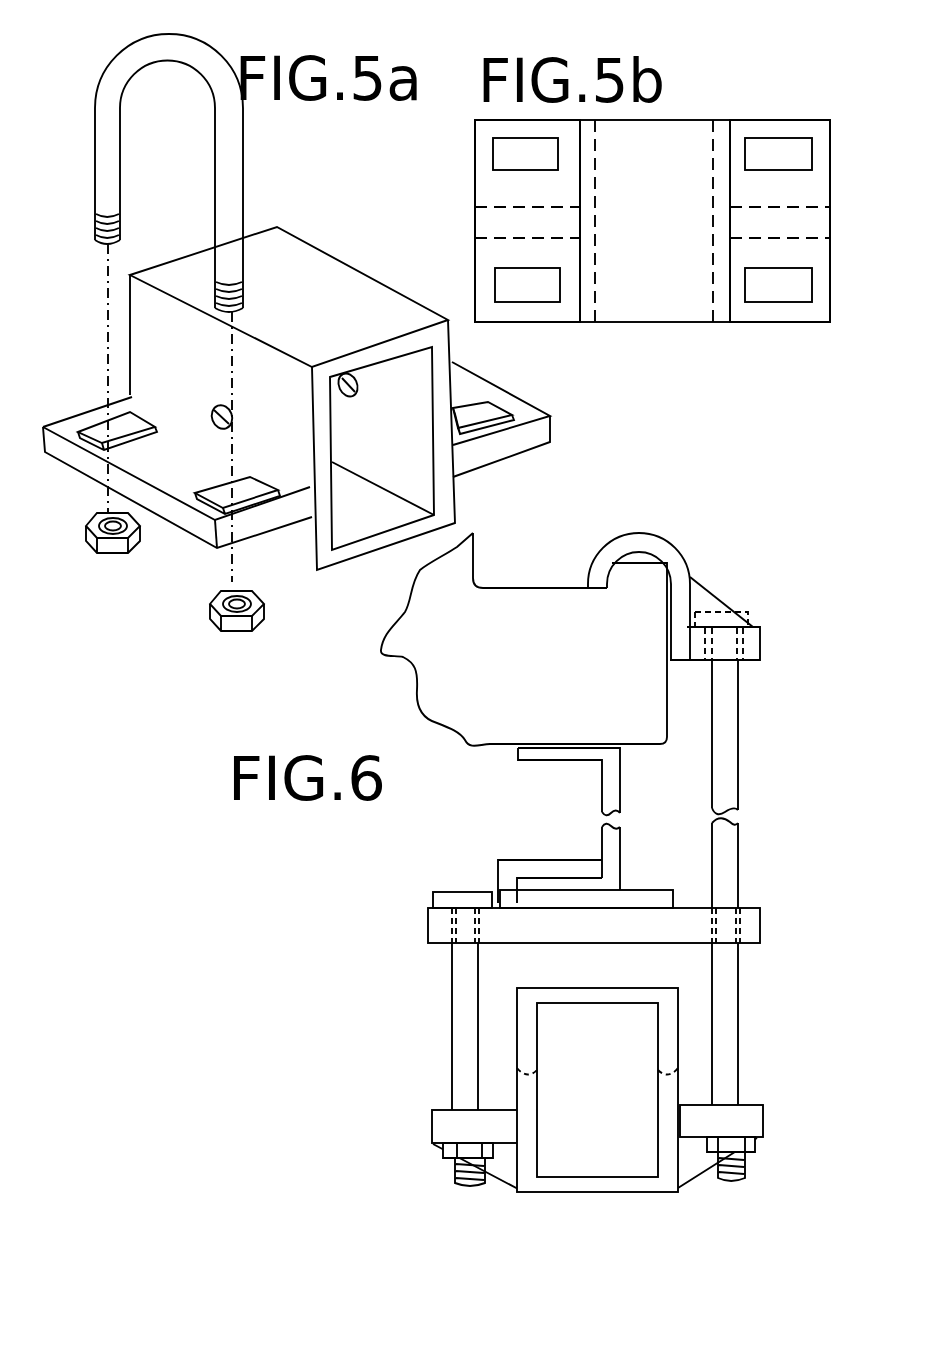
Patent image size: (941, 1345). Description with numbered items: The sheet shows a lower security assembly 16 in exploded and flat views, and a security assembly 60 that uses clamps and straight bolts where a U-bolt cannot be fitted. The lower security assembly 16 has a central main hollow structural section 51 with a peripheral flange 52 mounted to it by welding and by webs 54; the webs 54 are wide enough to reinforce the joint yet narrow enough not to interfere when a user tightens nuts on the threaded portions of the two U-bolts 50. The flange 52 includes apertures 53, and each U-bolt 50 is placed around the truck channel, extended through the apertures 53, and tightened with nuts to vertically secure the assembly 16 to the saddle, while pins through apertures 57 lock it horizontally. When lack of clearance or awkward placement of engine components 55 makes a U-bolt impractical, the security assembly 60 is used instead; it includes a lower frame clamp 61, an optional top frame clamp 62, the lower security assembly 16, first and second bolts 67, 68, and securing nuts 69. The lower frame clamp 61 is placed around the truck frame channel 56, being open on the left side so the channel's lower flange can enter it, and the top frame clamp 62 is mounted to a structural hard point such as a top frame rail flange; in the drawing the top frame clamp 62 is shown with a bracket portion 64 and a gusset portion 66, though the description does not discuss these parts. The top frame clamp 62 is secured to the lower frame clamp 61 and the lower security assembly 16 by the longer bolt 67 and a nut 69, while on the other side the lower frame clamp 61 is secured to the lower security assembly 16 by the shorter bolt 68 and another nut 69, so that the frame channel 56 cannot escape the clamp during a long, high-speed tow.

In FIG. 5A, the lower security assembly 16 is at (312, 392).
In FIG. 6, the lower security assembly 16 is at (678, 1028).
In FIG. 5A, the U-bolt 50 is at (245, 155).
In FIG. 5A, the main hollow structural section 51 is at (335, 432).
In FIG. 5B, the main hollow structural section 51 is at (680, 118).
In FIG. 5A, the peripheral flange 52 is at (75, 458).
In FIG. 5B, the peripheral flange 52 is at (780, 322).
In FIG. 5A, the aperture 53 is at (120, 428).
In FIG. 5B, the aperture 53 is at (775, 142).
In FIG. 5B, the web 54 is at (728, 222).
In FIG. 6, the web 54 is at (500, 1185).
In FIG. 6, the engine component 55 is at (545, 678).
In FIG. 6, the truck frame channel 56 is at (620, 847).
In FIG. 5A, the aperture 57 is at (212, 414).
In FIG. 6, the aperture 57 is at (548, 1076).
In FIG. 6, the security assembly 60 is at (800, 774).
In FIG. 6, the lower frame clamp 61 is at (757, 878).
In FIG. 6, the top frame clamp 62 is at (607, 563).
In FIG. 6, the bracket 64 is at (760, 640).
In FIG. 6, the gusset 66 is at (706, 593).
In FIG. 6, the first bolt 67 is at (738, 714).
In FIG. 6, the second bolt 68 is at (453, 1010).
In FIG. 5A, the securing nut 69 is at (212, 610).
In FIG. 6, the securing nut 69 is at (443, 1152).